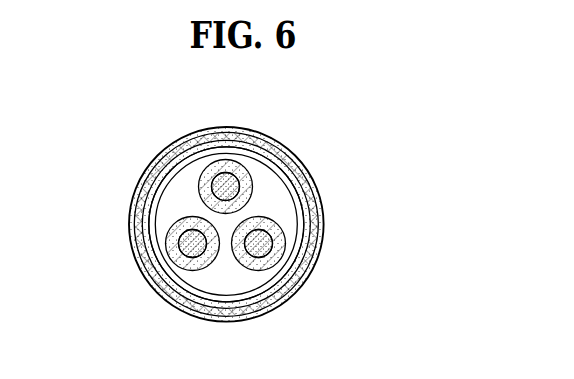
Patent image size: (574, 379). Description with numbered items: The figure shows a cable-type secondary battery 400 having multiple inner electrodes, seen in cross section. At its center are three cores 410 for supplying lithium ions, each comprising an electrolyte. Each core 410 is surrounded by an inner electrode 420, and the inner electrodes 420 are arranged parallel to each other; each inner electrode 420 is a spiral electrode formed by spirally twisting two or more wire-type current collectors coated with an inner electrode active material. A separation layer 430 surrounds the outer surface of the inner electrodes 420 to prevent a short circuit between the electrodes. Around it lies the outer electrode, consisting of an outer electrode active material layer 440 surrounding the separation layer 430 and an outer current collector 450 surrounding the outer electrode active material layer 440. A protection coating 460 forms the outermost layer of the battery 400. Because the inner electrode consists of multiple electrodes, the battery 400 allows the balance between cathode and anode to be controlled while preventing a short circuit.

The cable-type secondary battery 400 is at (300, 128).
The core for supplying lithium ions 410 is at (225, 179).
The inner electrode 420 is at (238, 166).
The separation layer 430 is at (298, 191).
The outer electrode active material layer 440 is at (307, 197).
The outer current collector 450 is at (316, 208).
The protection coating 460 is at (317, 220).